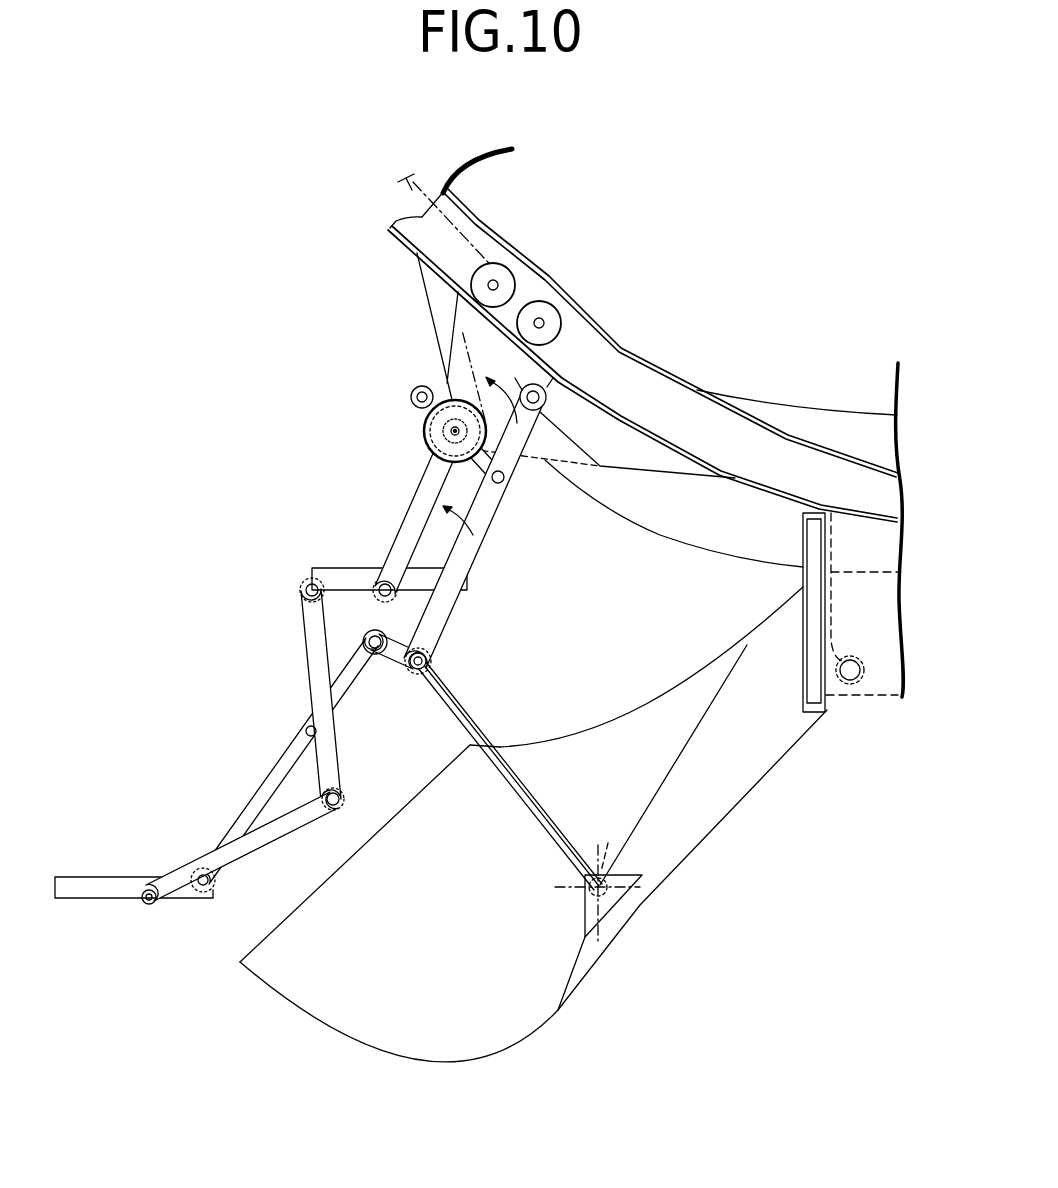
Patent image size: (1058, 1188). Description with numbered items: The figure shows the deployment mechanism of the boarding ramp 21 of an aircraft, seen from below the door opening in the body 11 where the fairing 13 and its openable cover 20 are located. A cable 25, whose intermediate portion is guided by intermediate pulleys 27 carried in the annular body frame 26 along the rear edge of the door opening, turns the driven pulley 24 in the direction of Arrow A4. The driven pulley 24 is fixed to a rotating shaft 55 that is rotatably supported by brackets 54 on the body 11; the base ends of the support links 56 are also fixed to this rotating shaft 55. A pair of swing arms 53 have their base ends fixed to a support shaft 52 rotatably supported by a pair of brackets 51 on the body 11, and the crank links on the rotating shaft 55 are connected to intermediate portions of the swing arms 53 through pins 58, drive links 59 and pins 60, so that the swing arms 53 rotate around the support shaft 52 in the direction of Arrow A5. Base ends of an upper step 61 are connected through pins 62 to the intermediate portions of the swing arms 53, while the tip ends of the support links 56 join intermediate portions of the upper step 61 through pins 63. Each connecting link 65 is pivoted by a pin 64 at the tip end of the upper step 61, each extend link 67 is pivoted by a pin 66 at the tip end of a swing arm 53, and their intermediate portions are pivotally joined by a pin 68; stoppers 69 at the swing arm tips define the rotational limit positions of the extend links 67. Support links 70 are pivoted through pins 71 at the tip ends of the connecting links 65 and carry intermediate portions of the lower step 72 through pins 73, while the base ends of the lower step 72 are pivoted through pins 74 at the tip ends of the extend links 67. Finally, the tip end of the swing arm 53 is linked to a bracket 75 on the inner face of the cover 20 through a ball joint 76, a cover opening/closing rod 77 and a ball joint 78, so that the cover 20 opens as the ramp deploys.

The body 11 is at (579, 423).
The fairing 13 is at (628, 525).
The cover 20 is at (626, 730).
The boarding ramp 21 is at (292, 673).
The driven pulley 24 is at (447, 380).
The cable 25 is at (477, 227).
The body frame 26 is at (628, 368).
The intermediate pulleys 27 is at (548, 308).
The brackets 51 is at (555, 402).
The support shaft 52 is at (538, 408).
The swing arms 53 is at (488, 517).
The brackets 54 is at (623, 471).
The rotating shaft 55 is at (452, 432).
The support links 56 is at (412, 500).
The pins 58 is at (411, 395).
The drive links 59 is at (447, 473).
The pins 60 is at (505, 482).
The upper step 61 is at (347, 566).
The pins 62 is at (463, 587).
The pins 63 is at (382, 582).
The pin 64 is at (304, 586).
The connecting link 65 is at (303, 656).
The pin 66 is at (374, 636).
The extend link 67 is at (264, 783).
The pin 68 is at (302, 731).
The stoppers 69 is at (374, 672).
The support links 70 is at (289, 824).
The pins 71 is at (343, 800).
The lower step 72 is at (98, 877).
The pins 73 is at (147, 908).
The pins 74 is at (215, 891).
The bracket 75 is at (584, 911).
The ball joint 76 is at (432, 652).
The cover opening/closing rod 77 is at (512, 798).
The ball joint 78 is at (597, 870).
The Arrow A4 is at (492, 384).
The Arrow A5 is at (439, 525).